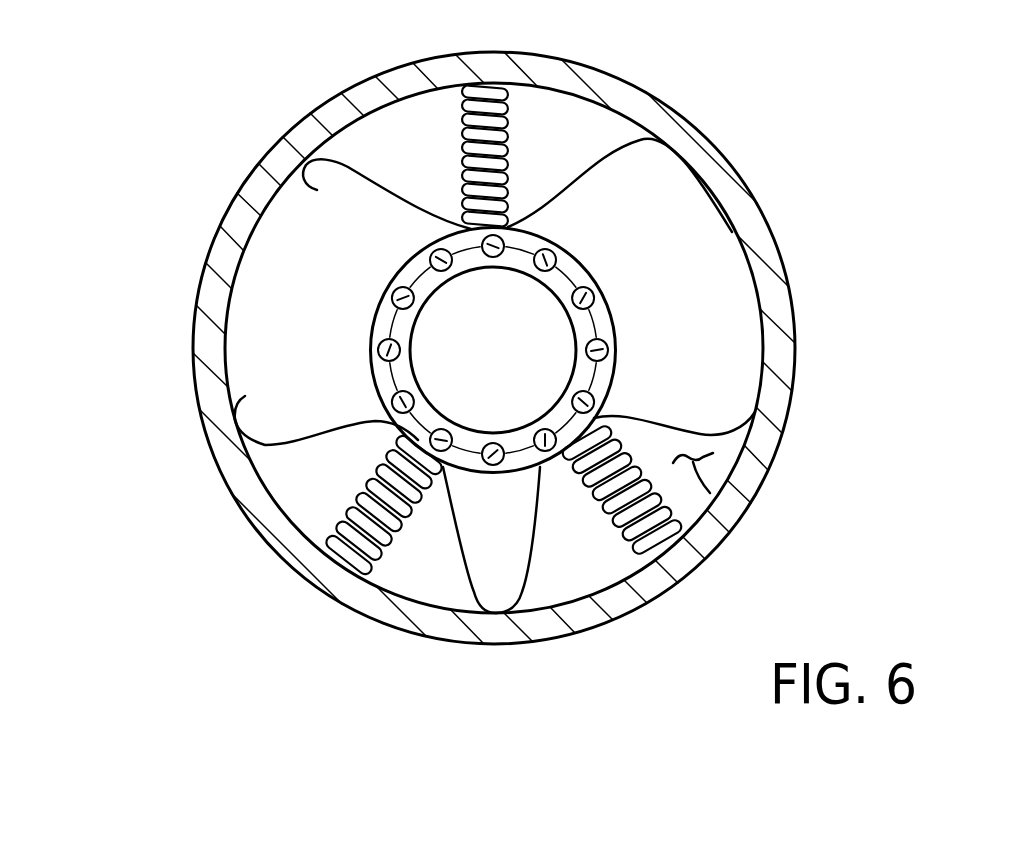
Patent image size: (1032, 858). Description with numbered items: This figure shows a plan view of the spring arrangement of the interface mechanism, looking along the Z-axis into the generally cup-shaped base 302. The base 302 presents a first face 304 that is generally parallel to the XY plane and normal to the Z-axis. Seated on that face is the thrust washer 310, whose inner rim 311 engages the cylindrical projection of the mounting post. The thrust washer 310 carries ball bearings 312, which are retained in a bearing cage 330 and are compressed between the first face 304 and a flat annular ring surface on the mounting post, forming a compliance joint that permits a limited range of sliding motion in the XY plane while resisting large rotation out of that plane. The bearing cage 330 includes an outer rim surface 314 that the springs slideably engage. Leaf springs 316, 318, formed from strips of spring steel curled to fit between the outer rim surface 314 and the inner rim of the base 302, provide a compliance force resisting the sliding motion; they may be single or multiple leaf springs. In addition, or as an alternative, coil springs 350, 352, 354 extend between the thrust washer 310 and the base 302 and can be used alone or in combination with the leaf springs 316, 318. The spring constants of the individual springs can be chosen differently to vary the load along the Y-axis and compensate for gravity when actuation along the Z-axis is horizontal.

The base 302 is at (758, 200).
The first face 304 is at (710, 491).
The thrust washer 310 is at (617, 363).
The inner rim 311 is at (567, 320).
The ball bearings 312 is at (373, 333).
The outer rim surface 314 is at (583, 263).
The leaf spring 316 is at (372, 180).
The leaf spring 318 is at (306, 437).
The bearing cage 330 is at (408, 270).
The coil spring 350 is at (377, 487).
The coil spring 352 is at (645, 488).
The coil spring 354 is at (515, 140).